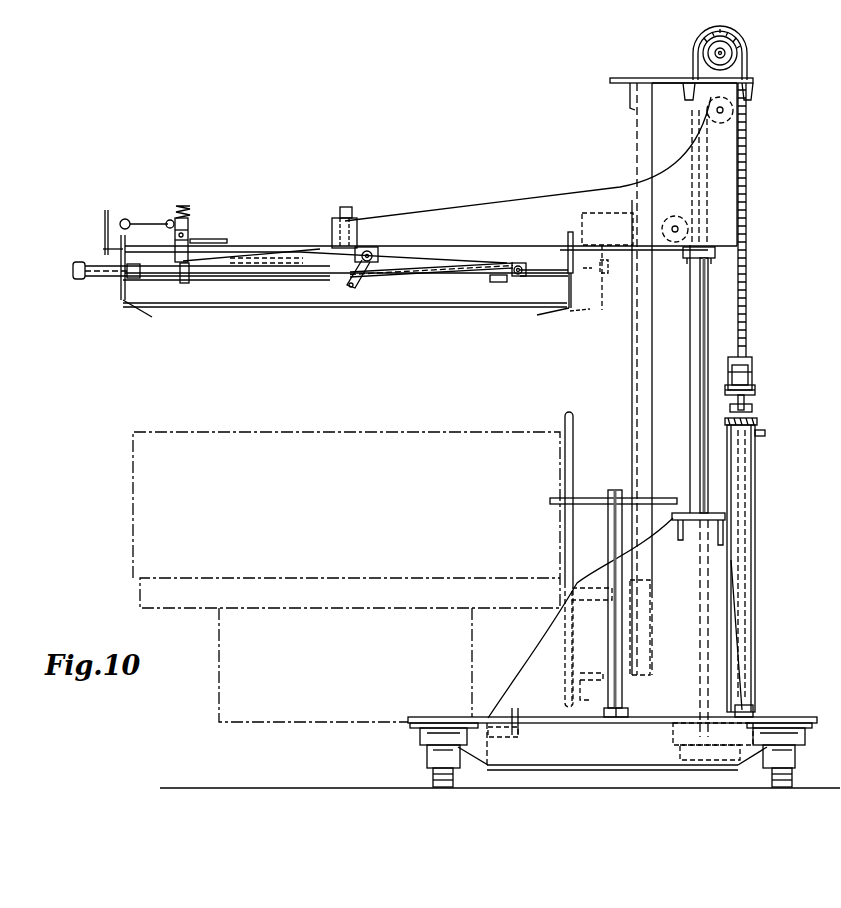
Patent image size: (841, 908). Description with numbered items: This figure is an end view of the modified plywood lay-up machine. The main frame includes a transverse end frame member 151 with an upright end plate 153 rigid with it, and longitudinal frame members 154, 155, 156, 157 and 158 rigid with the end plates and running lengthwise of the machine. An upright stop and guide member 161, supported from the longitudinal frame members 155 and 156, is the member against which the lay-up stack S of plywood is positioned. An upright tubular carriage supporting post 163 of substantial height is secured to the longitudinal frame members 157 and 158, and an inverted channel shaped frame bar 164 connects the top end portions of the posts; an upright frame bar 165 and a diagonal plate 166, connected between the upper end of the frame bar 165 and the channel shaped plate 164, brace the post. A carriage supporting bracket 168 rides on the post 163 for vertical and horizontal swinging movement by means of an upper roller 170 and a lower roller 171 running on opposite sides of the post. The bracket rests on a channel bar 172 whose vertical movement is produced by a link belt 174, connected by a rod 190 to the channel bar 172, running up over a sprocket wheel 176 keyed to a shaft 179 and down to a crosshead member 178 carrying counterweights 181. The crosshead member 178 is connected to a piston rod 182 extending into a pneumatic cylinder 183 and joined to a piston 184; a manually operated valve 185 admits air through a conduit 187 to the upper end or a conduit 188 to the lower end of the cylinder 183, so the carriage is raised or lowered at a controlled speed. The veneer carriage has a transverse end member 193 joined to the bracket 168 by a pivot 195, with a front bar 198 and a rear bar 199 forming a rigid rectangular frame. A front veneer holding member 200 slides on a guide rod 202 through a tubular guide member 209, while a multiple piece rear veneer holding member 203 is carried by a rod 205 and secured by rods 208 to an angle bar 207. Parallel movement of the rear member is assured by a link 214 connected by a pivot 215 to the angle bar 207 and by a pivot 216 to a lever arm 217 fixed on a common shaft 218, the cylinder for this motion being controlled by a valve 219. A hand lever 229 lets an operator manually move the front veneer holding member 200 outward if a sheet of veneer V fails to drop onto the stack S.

The transverse end frame member 151 is at (598, 749).
The upright end plate 153 is at (519, 694).
The longitudinal frame member 154 is at (520, 730).
The longitudinal frame member 155 is at (614, 642).
The longitudinal frame member 156 is at (592, 600).
The longitudinal frame member 157 is at (726, 516).
The longitudinal frame member 158 is at (713, 747).
The upright stop and guide member 161 is at (570, 445).
The carriage supporting post 163 is at (705, 315).
The frame bar 164 is at (753, 85).
The upright frame bar 165 is at (640, 156).
The diagonal plate 166 is at (657, 80).
The carriage supporting bracket 168 is at (549, 200).
The upper roller 170 is at (730, 120).
The lower roller 171 is at (676, 216).
The channel bar 172 is at (716, 252).
The link belt 174 is at (748, 332).
The sprocket wheel 176 is at (733, 40).
The crosshead member 178 is at (756, 391).
The shaft 179 is at (728, 54).
The counterweight 181 is at (752, 380).
The piston rod 182 is at (758, 407).
The fluid pressure cylinder 183 is at (757, 592).
The piston 184 is at (755, 705).
The manually operated valve 185 is at (178, 250).
The conduit 187 is at (758, 436).
The conduit 188 is at (768, 750).
The rod 190 is at (702, 192).
The transverse end member 193 is at (422, 262).
The pivot 195 is at (370, 200).
The front bar 198 is at (189, 285).
The rear bar 199 is at (505, 283).
The front veneer holding member 200 is at (121, 297).
The guide rod 202 is at (140, 278).
The rear veneer holding member 203 is at (562, 315).
The rod 205 is at (228, 277).
The angle bar 207 is at (520, 277).
The rod 208 is at (535, 270).
The tubular guide member 209 is at (97, 280).
The link 214 is at (410, 285).
The pivot 215 is at (516, 278).
The pivot 216 is at (353, 283).
The lever arm 217 is at (340, 280).
The shaft 218 is at (369, 250).
The valve 219 is at (207, 238).
The hand lever 229 is at (103, 247).
The lay-up stack S is at (148, 515).
The sheet of veneer V is at (318, 307).